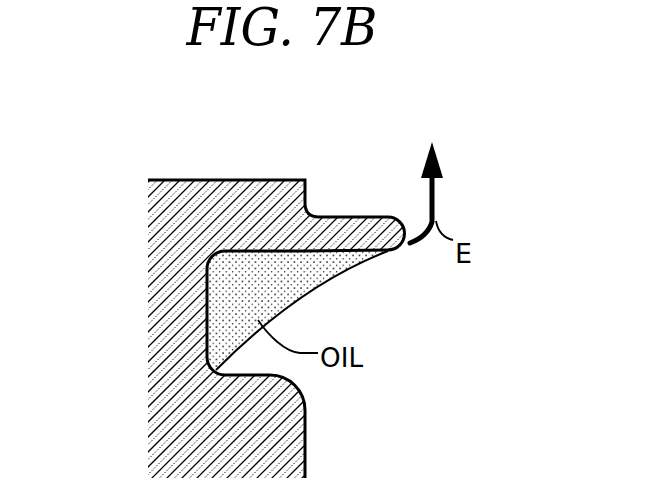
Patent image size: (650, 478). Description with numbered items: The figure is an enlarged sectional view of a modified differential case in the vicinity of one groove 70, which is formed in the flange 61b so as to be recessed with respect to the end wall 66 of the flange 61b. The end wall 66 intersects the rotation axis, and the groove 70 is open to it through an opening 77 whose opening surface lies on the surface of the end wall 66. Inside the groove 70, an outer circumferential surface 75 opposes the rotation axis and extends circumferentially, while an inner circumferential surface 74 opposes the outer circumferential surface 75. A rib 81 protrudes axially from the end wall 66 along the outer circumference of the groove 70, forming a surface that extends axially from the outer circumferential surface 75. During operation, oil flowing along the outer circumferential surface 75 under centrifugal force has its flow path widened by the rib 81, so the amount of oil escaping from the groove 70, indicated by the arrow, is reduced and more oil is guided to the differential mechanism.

The flange 61b is at (165, 305).
The rib 81 is at (350, 214).
The groove 70 is at (422, 327).
The opening 77 is at (308, 315).
The outer circumferential surface 75 is at (243, 252).
The inner circumferential surface 74 is at (247, 373).
The end wall 66 is at (305, 448).